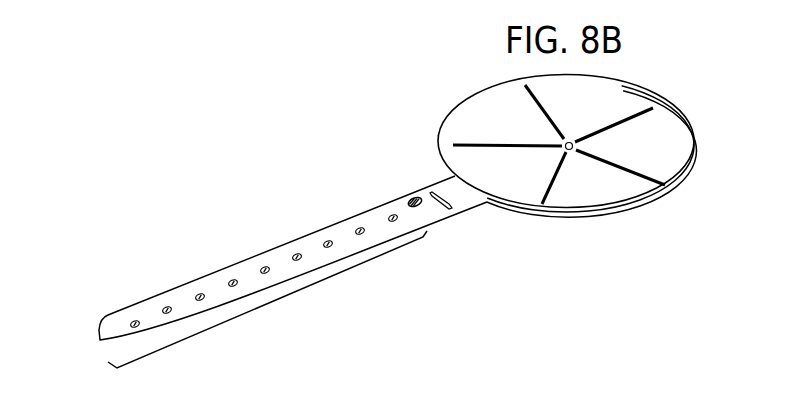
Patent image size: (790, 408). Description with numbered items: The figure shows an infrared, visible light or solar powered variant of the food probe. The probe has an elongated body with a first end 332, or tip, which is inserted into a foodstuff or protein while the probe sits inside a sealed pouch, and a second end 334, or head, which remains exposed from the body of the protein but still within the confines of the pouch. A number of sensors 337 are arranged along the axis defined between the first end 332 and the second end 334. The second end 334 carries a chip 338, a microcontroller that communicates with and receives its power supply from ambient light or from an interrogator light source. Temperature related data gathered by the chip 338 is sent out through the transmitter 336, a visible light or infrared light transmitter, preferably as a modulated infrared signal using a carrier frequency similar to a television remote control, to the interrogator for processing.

The first end 332 is at (97, 340).
The second end 334 is at (485, 203).
The transmitter 336 is at (421, 191).
The sensors 337 is at (262, 307).
The chip 338 is at (408, 196).